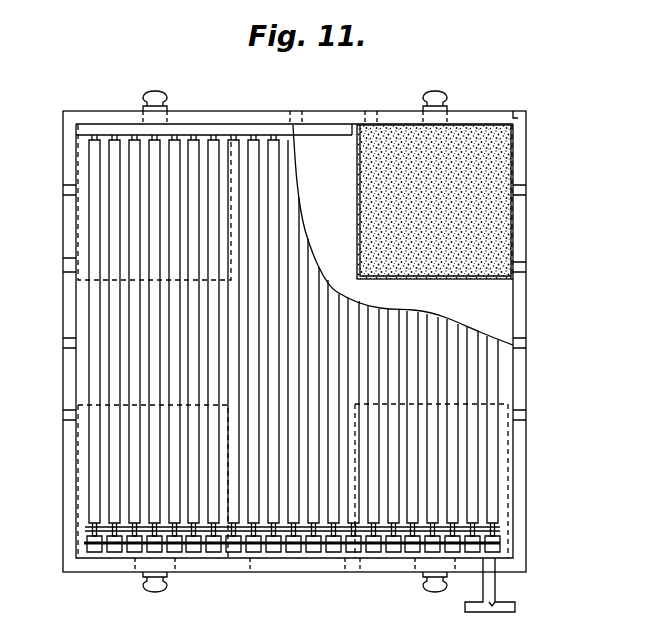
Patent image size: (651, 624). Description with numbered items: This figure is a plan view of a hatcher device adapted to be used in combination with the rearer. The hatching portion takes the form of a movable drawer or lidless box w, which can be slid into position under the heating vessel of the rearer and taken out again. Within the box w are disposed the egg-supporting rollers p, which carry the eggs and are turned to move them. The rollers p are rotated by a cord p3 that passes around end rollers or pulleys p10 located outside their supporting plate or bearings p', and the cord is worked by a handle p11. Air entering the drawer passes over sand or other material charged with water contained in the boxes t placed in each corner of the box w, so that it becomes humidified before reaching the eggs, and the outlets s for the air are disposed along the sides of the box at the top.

The egg-supporting rollers p is at (292, 329).
The supporting plate or bearings p' is at (292, 517).
The cord p3 is at (163, 547).
The end rollers or pulleys p10 is at (115, 547).
The handle p11 is at (497, 612).
The movable drawer or lidless box w is at (76, 127).
The boxes t is at (505, 220).
The outlets s is at (65, 336).